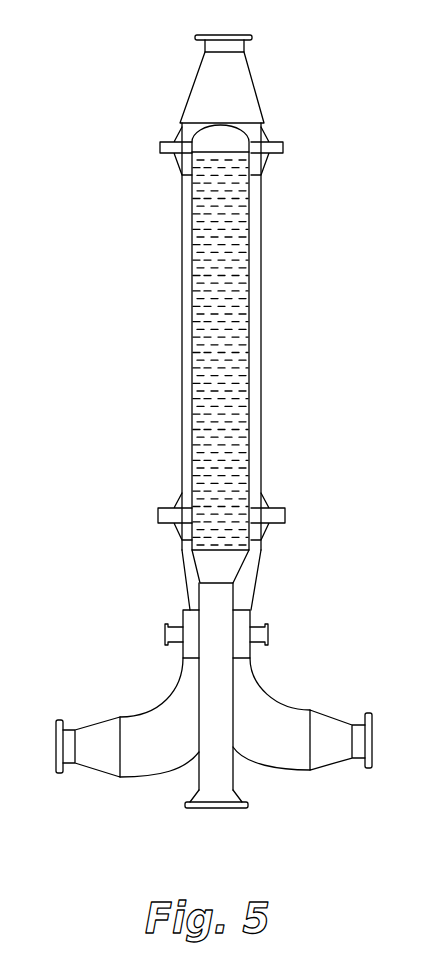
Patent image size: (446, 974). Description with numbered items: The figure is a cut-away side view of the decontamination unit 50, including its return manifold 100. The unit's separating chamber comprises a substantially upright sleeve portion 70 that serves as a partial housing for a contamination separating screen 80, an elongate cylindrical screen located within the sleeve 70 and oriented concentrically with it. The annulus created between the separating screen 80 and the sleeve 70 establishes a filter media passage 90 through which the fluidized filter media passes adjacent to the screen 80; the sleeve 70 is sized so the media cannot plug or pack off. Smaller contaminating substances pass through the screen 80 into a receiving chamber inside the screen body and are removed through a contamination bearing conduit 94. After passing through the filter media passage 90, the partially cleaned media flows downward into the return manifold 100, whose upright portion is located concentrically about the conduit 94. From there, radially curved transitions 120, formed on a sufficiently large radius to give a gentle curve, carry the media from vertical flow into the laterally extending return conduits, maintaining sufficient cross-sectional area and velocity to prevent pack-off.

The decontamination unit 50 is at (97, 210).
The upright sleeve portion 70 is at (262, 221).
The contamination separating screen 80 is at (233, 295).
The filter media passage 90 is at (188, 332).
The contamination bearing conduit 94 is at (235, 778).
The return manifold 100 is at (293, 630).
The radially curved transition 120 is at (147, 710).